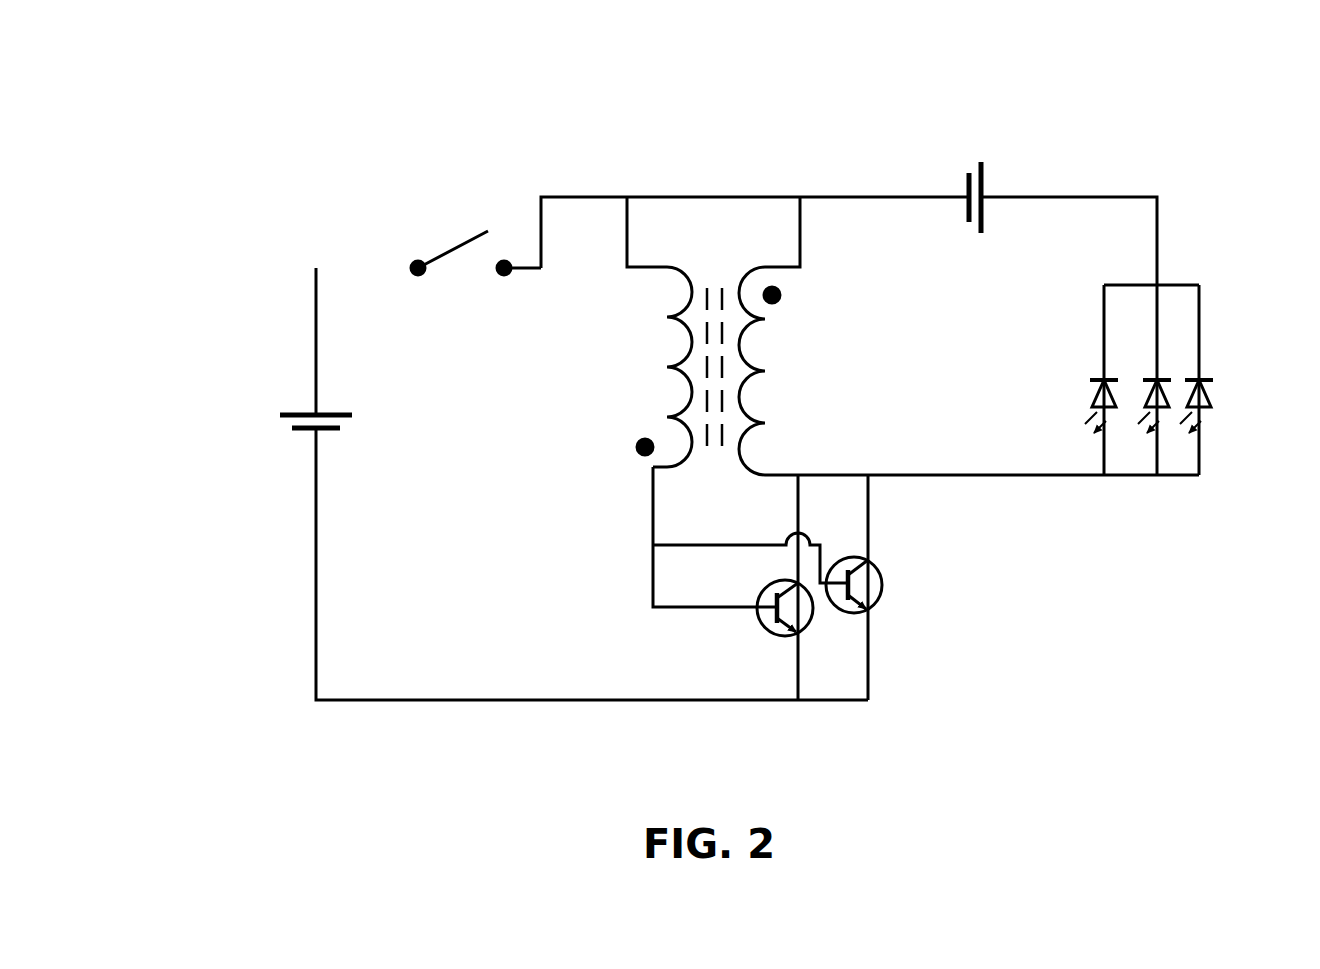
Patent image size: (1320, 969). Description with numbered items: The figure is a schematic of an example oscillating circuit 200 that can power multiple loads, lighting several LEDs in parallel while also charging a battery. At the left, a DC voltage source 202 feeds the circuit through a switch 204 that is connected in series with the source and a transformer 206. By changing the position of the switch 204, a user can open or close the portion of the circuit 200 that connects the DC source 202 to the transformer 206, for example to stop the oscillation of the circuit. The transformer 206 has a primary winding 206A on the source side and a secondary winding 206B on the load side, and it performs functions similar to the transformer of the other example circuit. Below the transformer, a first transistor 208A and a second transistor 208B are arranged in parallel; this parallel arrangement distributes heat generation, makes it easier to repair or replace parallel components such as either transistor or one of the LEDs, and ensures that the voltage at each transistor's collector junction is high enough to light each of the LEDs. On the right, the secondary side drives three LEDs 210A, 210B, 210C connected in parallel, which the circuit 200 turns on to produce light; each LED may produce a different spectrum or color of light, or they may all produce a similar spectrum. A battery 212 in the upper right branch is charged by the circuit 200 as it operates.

The oscillating circuit 200 is at (188, 122).
The DC voltage source 202 is at (352, 415).
The switch 204 is at (445, 248).
The transformer 206 is at (695, 371).
The primary winding 206A is at (688, 343).
The secondary winding 206B is at (737, 351).
The first transistor 208A is at (762, 626).
The second transistor 208B is at (882, 578).
The LED 210A is at (1093, 399).
The LED 210B is at (1170, 390).
The LED 210C is at (1210, 400).
The battery 212 is at (983, 225).